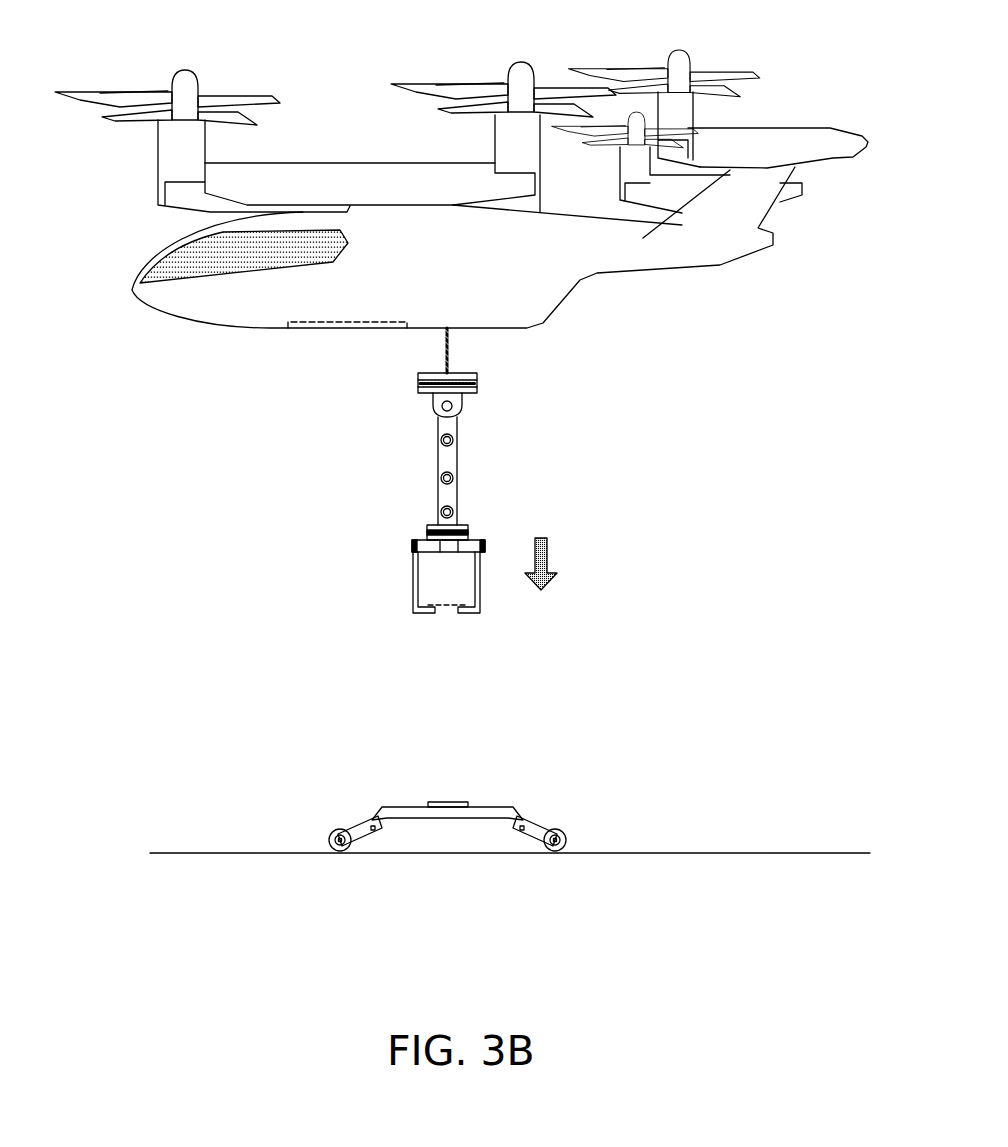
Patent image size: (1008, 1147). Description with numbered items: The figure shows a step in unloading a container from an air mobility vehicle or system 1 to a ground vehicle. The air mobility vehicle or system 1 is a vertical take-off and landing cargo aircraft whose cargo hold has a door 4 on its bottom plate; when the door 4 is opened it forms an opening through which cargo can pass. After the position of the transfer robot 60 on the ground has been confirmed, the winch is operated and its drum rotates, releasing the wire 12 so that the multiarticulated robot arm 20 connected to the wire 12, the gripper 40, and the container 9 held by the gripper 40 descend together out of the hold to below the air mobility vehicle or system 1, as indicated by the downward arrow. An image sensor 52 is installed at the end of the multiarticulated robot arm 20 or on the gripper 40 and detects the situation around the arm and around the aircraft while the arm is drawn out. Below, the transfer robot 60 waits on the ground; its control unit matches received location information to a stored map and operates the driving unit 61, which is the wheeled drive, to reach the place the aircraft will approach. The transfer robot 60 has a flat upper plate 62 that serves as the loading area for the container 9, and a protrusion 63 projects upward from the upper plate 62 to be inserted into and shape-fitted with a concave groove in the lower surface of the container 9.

The air mobility vehicle or system 1 is at (315, 130).
The door 4 is at (318, 330).
The wire 12 is at (443, 335).
The multiarticulated robot arm 20 is at (443, 458).
The gripper 40 is at (422, 542).
The image sensor 52 is at (412, 548).
The container 9 is at (470, 590).
The transfer robot 60 is at (526, 796).
The driving unit 61 is at (558, 832).
The upper plate 62 is at (407, 812).
The protrusion 63 is at (457, 800).